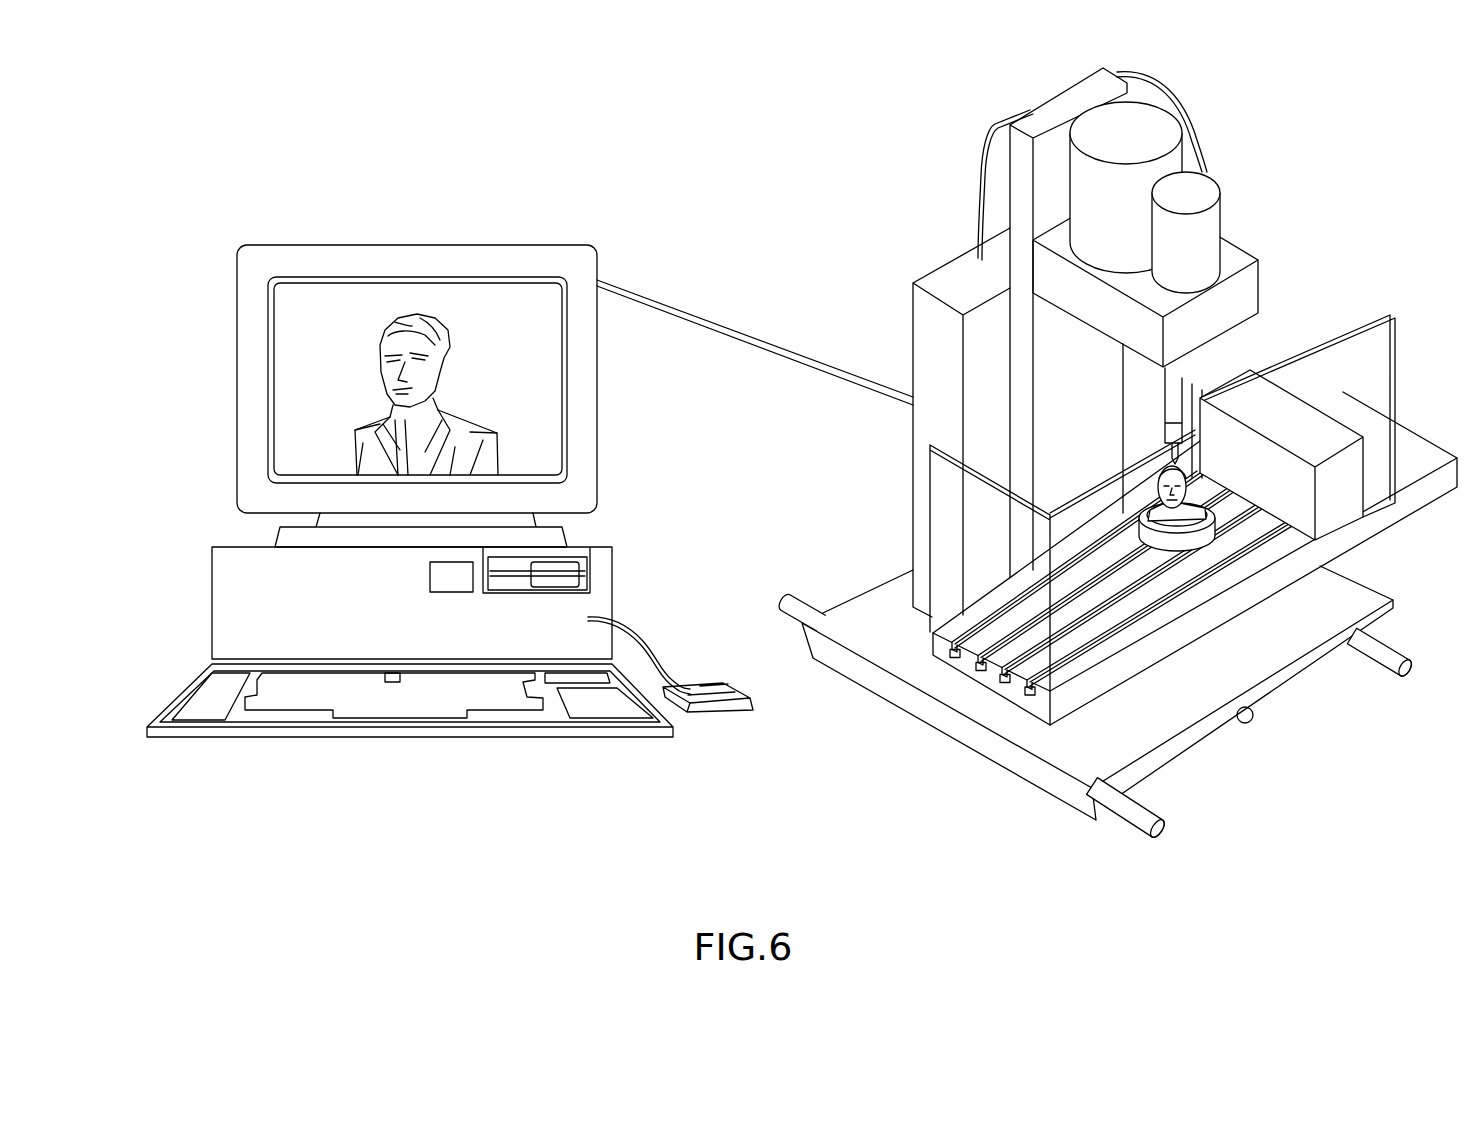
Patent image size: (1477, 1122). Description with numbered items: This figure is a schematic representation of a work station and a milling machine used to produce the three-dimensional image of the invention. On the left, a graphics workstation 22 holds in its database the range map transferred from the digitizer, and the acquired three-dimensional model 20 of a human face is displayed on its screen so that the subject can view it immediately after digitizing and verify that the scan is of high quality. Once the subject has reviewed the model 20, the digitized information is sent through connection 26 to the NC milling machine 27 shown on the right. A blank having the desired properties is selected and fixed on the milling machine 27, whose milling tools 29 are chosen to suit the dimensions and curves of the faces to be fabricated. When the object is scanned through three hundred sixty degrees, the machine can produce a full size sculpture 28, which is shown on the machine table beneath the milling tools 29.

The 3-D model 20 is at (423, 345).
The graphics workstation 22 is at (587, 258).
The connection 26 is at (806, 366).
The NC milling machine 27 is at (1196, 196).
The full size sculpture 28 is at (1210, 498).
The milling tools 29 is at (1184, 404).